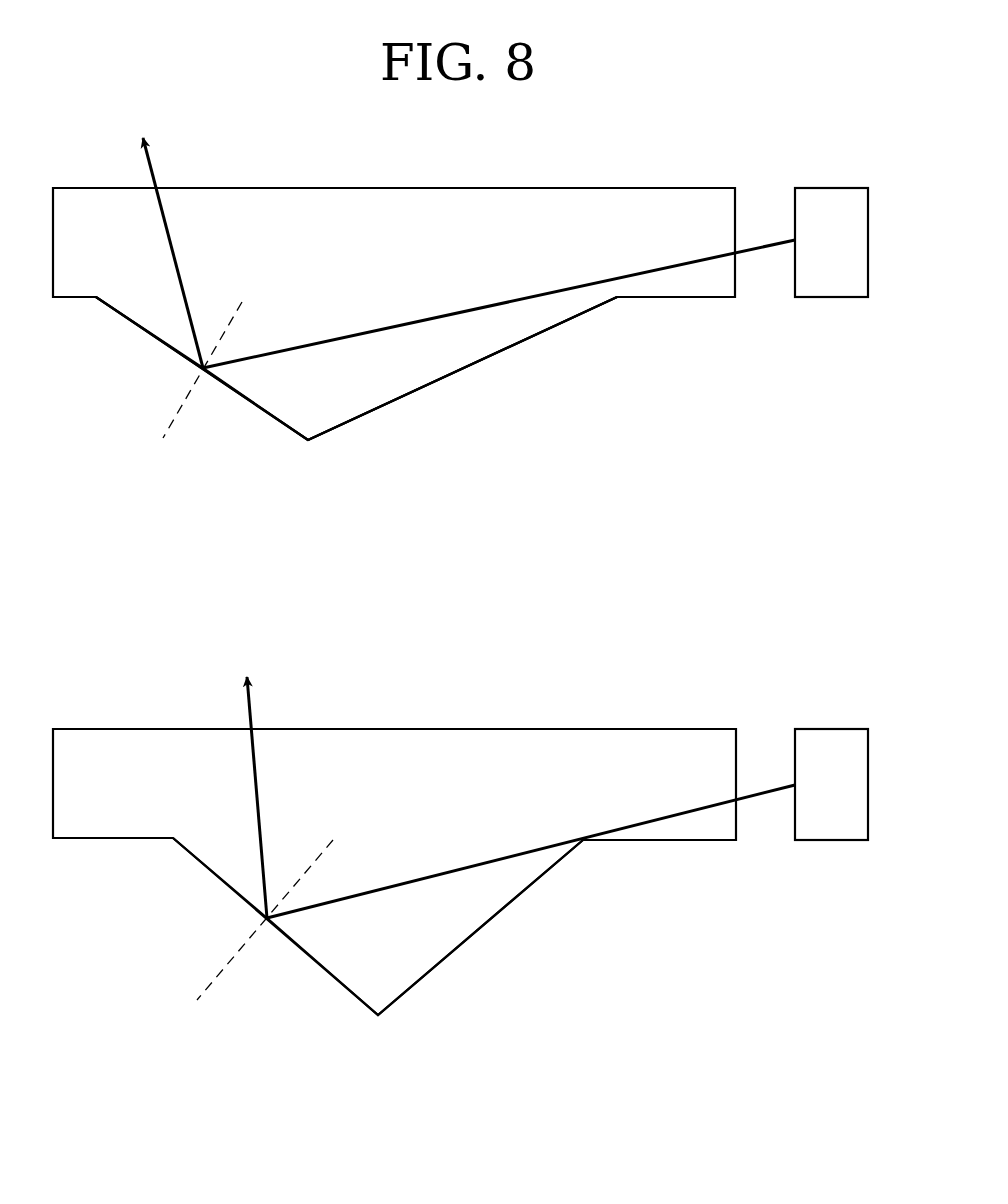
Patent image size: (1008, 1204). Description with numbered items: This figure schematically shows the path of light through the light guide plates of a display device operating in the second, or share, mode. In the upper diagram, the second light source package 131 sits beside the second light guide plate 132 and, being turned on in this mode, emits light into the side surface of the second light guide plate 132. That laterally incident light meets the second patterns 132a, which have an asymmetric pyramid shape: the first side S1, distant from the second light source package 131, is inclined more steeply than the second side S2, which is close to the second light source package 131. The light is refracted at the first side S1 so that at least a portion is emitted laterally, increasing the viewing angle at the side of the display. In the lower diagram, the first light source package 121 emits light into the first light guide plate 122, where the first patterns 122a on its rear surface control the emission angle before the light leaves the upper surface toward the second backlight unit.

The second light guide plate 132 is at (738, 200).
The second light source package 131 is at (832, 188).
The second patterns 132a is at (543, 383).
The first side S1 is at (130, 327).
The second side S2 is at (527, 338).
The first light guide plate 122 is at (738, 742).
The first light source package 121 is at (832, 729).
The first patterns 122a is at (543, 927).